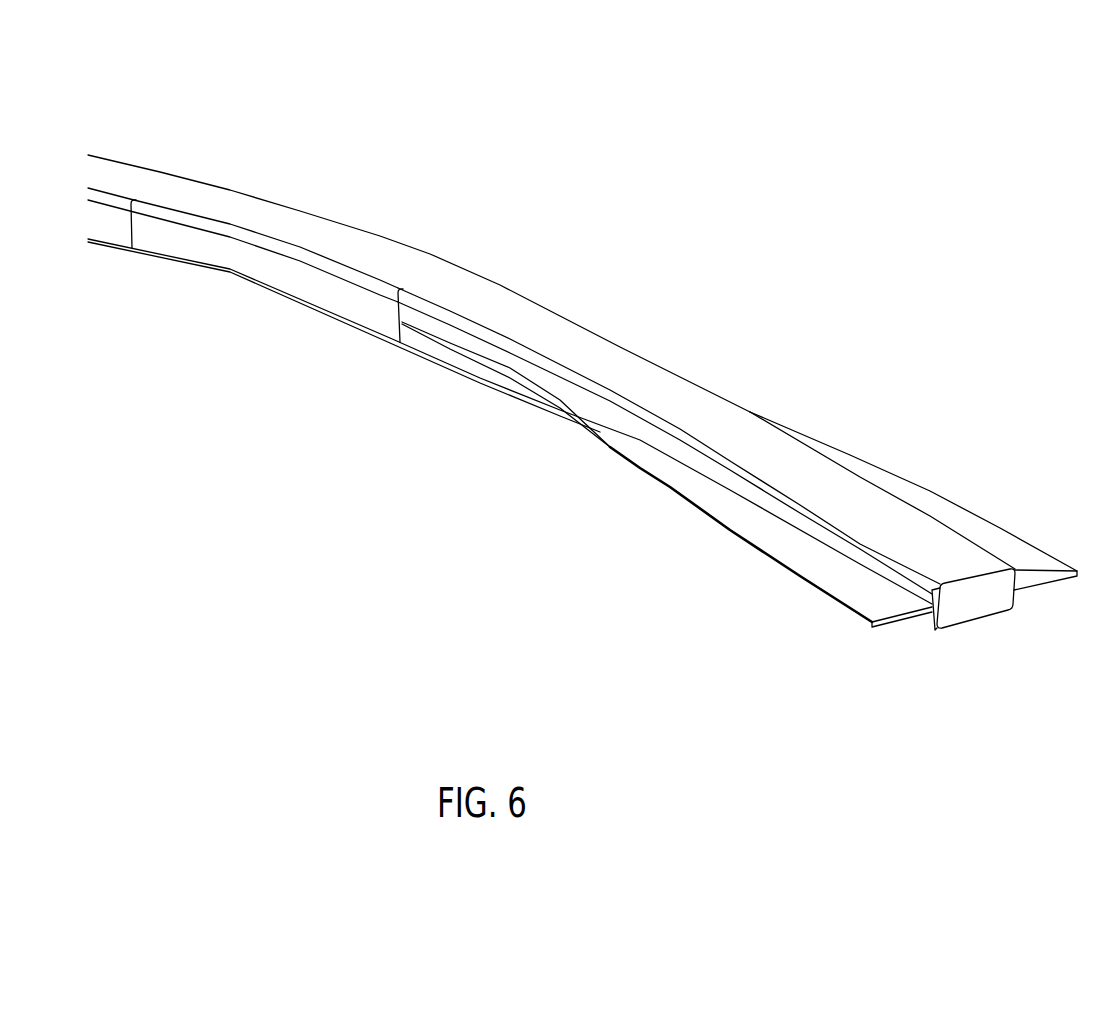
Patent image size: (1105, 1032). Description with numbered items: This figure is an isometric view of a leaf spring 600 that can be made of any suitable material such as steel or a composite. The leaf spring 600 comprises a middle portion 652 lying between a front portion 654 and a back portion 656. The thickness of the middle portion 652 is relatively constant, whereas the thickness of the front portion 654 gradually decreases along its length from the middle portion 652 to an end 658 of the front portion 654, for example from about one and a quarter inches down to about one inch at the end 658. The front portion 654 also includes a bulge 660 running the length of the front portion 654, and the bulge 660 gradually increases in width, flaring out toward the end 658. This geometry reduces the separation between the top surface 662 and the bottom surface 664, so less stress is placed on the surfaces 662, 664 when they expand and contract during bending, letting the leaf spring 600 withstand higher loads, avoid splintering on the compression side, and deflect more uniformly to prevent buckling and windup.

The leaf spring 600 is at (844, 210).
The middle portion 652 is at (277, 210).
The front portion 654 is at (693, 396).
The back portion 656 is at (108, 154).
The end 658 is at (970, 607).
The bulge 660 is at (700, 497).
The top surface 662 is at (341, 216).
The bottom surface 664 is at (282, 309).